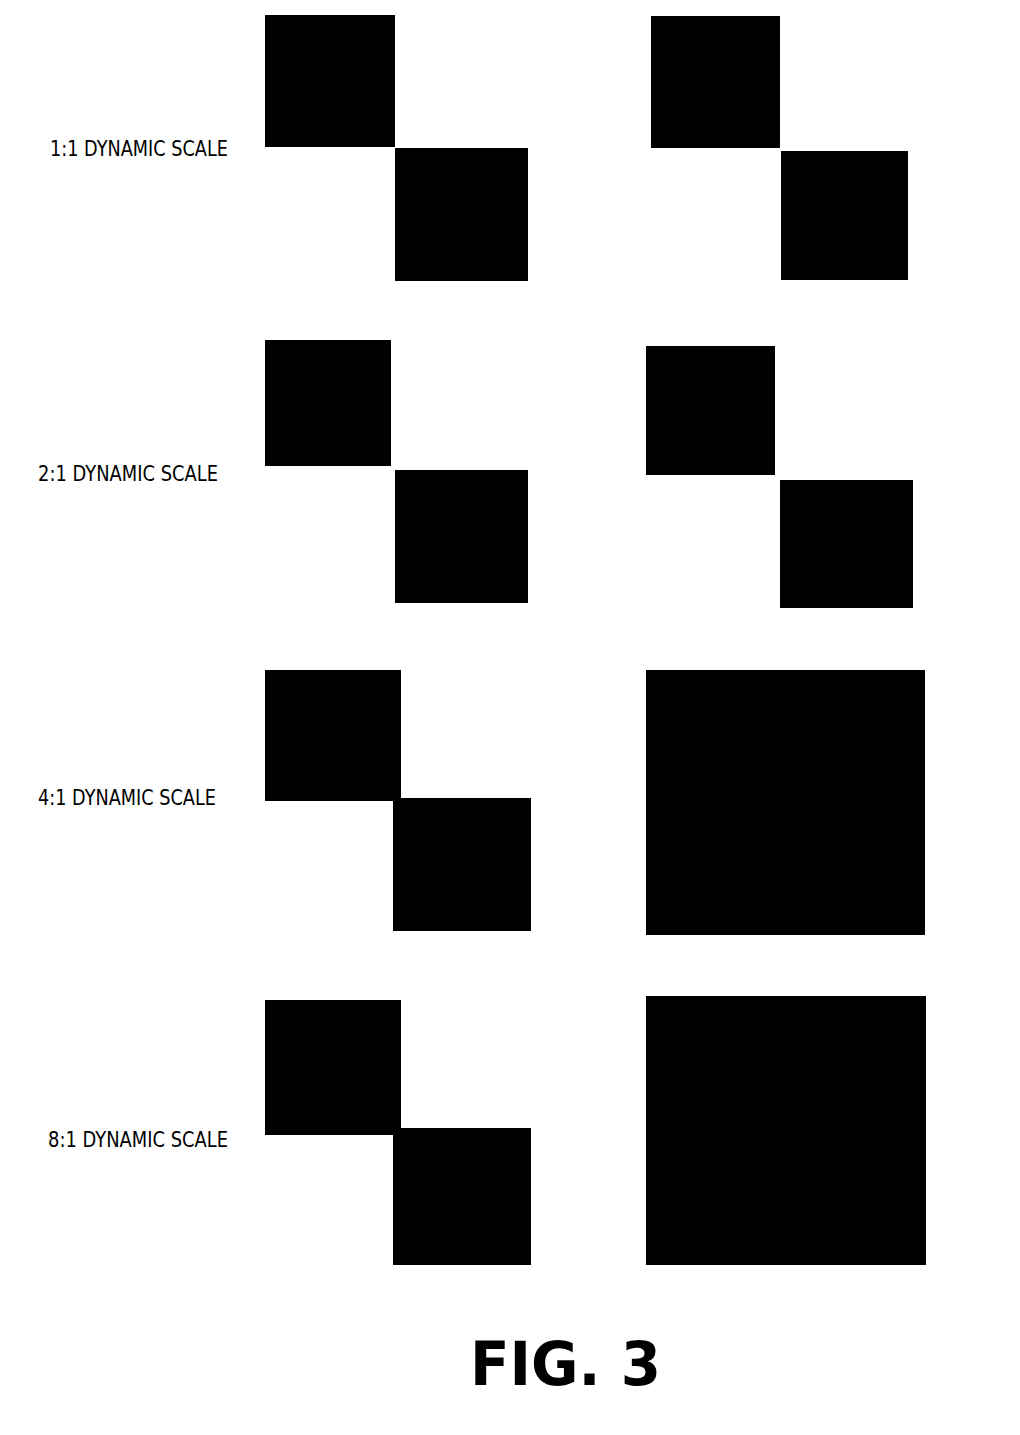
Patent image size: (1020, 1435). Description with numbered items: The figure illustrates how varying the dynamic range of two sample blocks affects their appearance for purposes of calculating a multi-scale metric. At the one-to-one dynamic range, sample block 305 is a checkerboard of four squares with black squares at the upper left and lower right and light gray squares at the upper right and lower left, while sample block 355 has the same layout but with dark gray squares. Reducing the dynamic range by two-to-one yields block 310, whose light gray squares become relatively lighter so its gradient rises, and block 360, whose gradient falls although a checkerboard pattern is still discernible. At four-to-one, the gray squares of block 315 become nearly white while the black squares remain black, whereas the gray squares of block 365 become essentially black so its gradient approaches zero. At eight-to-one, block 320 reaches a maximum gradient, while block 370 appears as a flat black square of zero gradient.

The sample block 305 is at (350, 276).
The block 310 is at (350, 600).
The block 315 is at (360, 930).
The block 320 is at (365, 1258).
The sample block 355 is at (737, 275).
The block 360 is at (738, 600).
The block 365 is at (733, 928).
The block 370 is at (733, 1258).